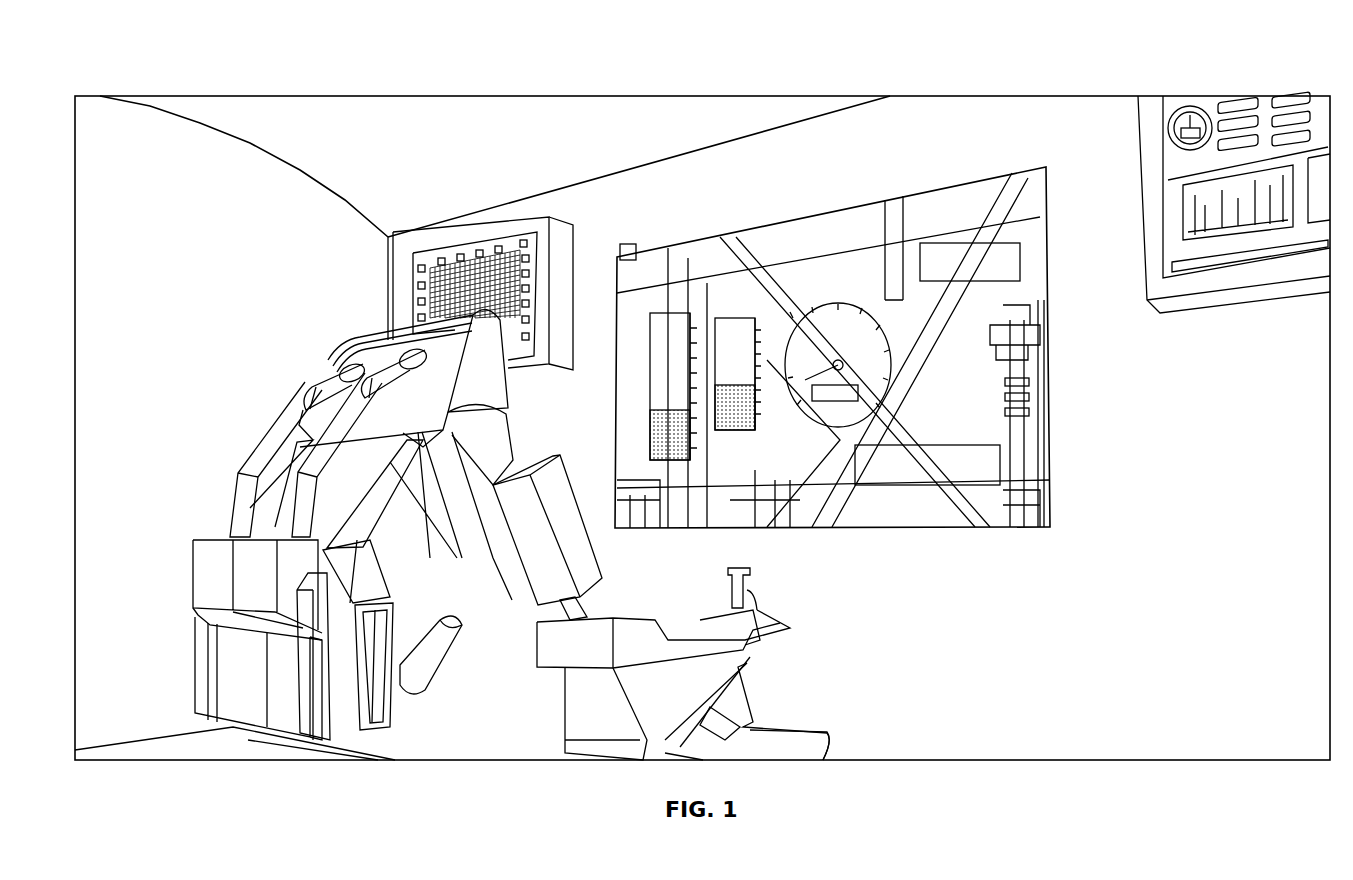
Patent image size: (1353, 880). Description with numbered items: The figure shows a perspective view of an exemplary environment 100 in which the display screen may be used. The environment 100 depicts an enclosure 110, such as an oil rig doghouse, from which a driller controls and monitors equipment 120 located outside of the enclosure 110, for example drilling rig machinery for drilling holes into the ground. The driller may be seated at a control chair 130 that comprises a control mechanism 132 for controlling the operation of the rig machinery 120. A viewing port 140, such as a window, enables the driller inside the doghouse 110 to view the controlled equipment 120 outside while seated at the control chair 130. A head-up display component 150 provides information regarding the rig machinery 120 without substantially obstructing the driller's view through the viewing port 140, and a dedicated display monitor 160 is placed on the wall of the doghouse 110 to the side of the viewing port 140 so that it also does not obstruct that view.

The environment 100 is at (162, 64).
The enclosure 110 is at (213, 251).
The controlled equipment 120 is at (1028, 404).
The control chair 130 is at (330, 358).
The control mechanism 132 is at (755, 587).
The viewing port 140 is at (883, 257).
The head-up display component 150 is at (950, 467).
The dedicated display monitor 160 is at (442, 247).